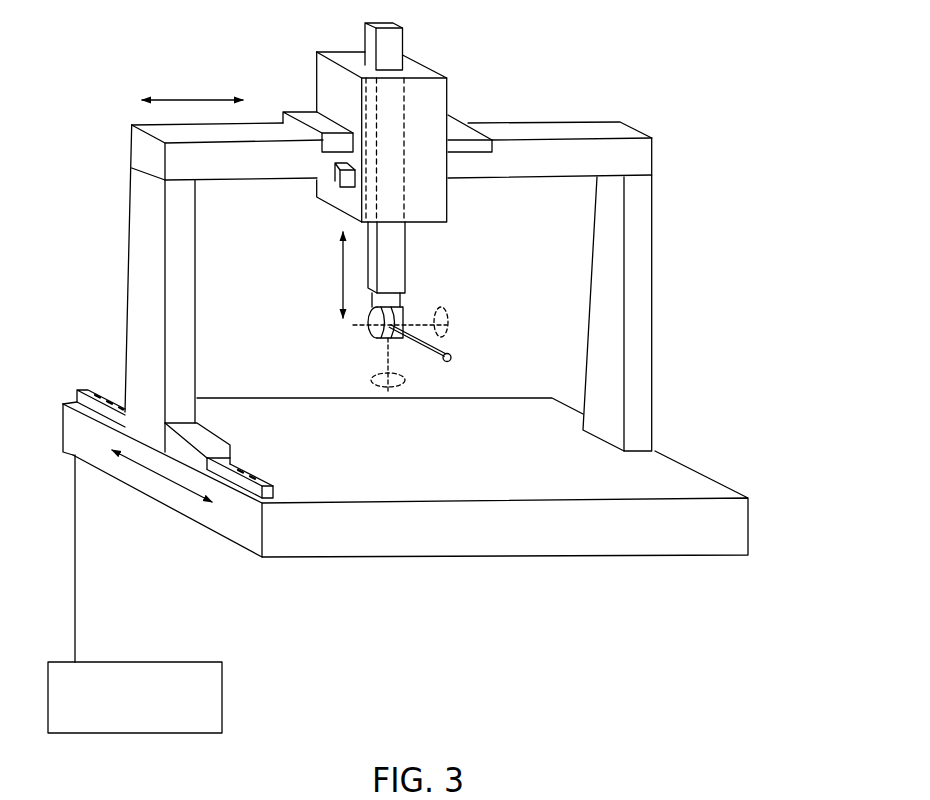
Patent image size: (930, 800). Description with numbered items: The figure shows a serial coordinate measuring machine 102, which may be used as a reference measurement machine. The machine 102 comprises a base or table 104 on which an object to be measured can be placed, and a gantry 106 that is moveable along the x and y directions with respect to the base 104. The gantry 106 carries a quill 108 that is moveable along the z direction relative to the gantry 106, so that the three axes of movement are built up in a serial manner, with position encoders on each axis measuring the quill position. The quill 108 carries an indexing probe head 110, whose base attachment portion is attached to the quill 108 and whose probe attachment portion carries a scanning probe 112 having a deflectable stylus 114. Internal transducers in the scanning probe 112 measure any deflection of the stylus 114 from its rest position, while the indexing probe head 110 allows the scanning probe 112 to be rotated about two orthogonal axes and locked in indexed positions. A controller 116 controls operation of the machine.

The serial coordinate measuring machine 102 is at (571, 84).
The base or table 104 is at (395, 557).
The gantry 106 is at (618, 133).
The quill 108 is at (398, 275).
The indexing probe head 110 is at (357, 338).
The scanning probe 112 is at (458, 358).
The deflectable stylus 114 is at (425, 354).
The controller 116 is at (157, 707).